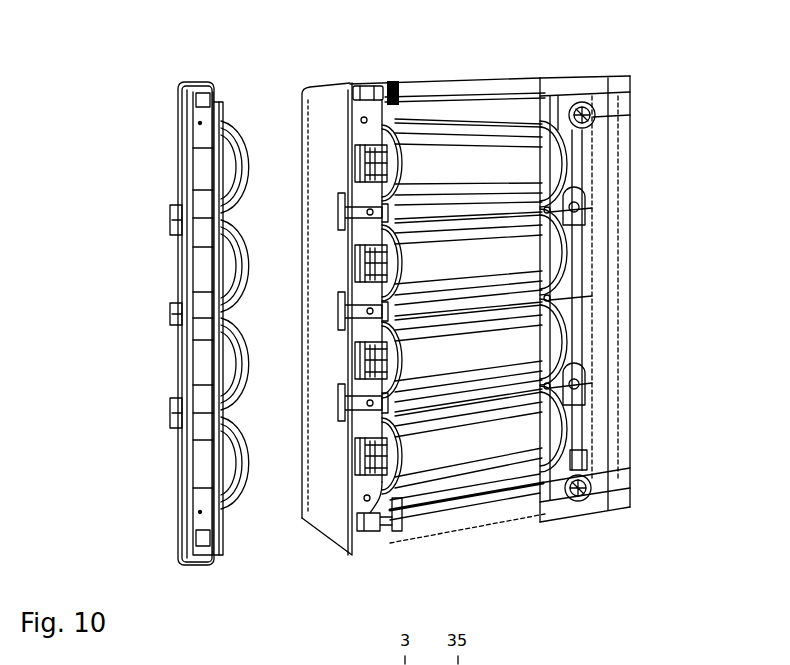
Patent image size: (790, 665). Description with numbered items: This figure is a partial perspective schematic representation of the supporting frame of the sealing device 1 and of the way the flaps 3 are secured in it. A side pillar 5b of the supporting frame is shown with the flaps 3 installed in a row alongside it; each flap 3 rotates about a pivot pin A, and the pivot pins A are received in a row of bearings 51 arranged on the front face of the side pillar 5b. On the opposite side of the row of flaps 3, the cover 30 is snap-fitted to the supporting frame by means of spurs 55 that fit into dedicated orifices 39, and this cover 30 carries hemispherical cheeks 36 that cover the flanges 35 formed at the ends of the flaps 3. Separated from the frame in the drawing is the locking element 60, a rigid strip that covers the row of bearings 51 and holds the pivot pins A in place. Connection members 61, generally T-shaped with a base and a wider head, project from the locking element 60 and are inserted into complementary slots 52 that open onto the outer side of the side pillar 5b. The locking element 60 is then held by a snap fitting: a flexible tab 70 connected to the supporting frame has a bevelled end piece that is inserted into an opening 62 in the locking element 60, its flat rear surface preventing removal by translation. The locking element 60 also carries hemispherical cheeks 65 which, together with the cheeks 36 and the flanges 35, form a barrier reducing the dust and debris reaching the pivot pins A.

The sealing device 1 is at (655, 112).
The flaps 3 is at (482, 138).
The side pillar 5b is at (322, 355).
The cover 30 is at (610, 340).
The flanges 35 is at (383, 480).
The hemispherical cheeks 36 is at (577, 439).
The dedicated orifices 39 is at (578, 505).
The bearings 51 is at (362, 140).
The slot 52 is at (357, 207).
The spurs 55 is at (579, 499).
The locking element 60 is at (178, 353).
The connection member 61 is at (178, 318).
The opening 62 is at (195, 98).
The hemispherical cheeks 65 is at (222, 474).
The flexible tab 70 is at (372, 528).
The pivot pin A is at (374, 158).